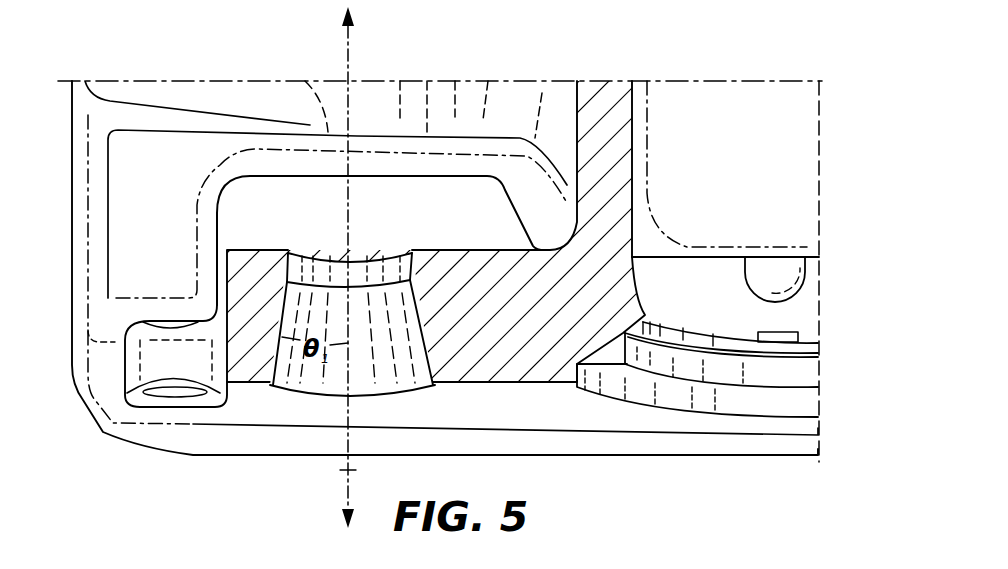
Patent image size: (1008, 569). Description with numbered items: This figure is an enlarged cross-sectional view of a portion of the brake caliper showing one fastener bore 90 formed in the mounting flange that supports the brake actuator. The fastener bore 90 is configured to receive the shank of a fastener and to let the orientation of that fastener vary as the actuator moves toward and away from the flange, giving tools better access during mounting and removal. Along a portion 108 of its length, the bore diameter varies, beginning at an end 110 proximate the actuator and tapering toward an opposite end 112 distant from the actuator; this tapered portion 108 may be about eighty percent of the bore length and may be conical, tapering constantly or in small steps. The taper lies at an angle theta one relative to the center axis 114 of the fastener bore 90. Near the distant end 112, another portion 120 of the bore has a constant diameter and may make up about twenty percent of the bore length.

The fastener bore 90 is at (383, 363).
The portion of the fastener bore 108 is at (305, 320).
The end of the fastener bore 110 is at (290, 382).
The opposite end of the fastener bore 112 is at (380, 257).
The center axis 114 is at (348, 470).
The portion of the fastener bore 120 is at (306, 264).